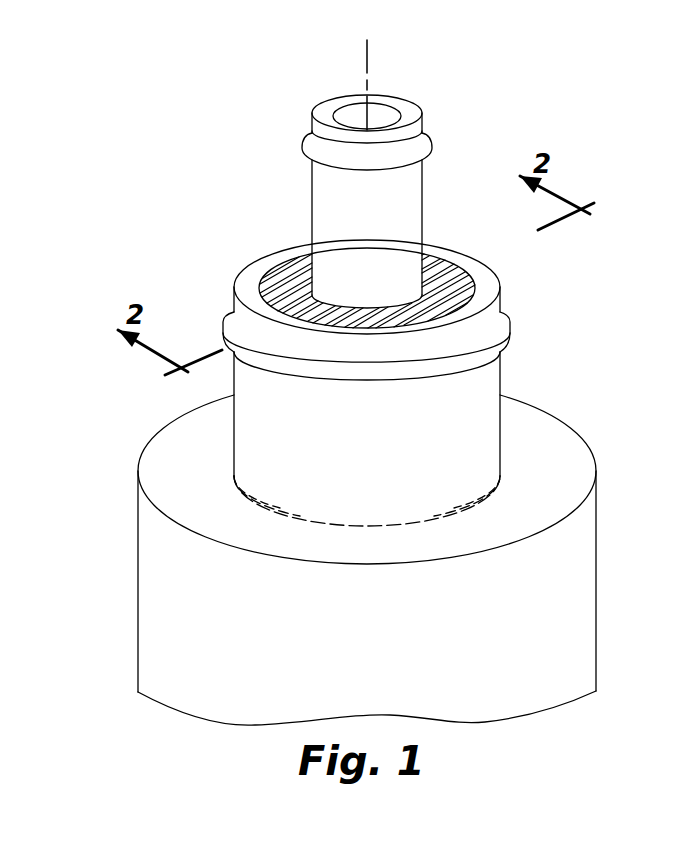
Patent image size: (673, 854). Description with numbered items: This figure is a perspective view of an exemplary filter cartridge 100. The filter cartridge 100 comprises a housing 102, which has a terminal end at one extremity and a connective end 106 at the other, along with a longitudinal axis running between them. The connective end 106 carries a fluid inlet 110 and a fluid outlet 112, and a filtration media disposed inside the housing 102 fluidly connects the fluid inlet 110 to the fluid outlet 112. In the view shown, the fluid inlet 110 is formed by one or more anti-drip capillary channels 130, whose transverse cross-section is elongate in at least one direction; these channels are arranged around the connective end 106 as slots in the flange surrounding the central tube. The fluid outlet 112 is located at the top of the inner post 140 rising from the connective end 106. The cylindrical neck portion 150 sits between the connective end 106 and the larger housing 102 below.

The filter cartridge 100 is at (403, 382).
The housing 102 is at (588, 544).
The connective end 106 is at (411, 194).
The fluid inlet 110 is at (374, 269).
The fluid outlet 112 is at (383, 115).
The anti-drip capillary channels 130 is at (302, 273).
The inner post 140 is at (408, 204).
The neck cylinder 150 is at (492, 383).